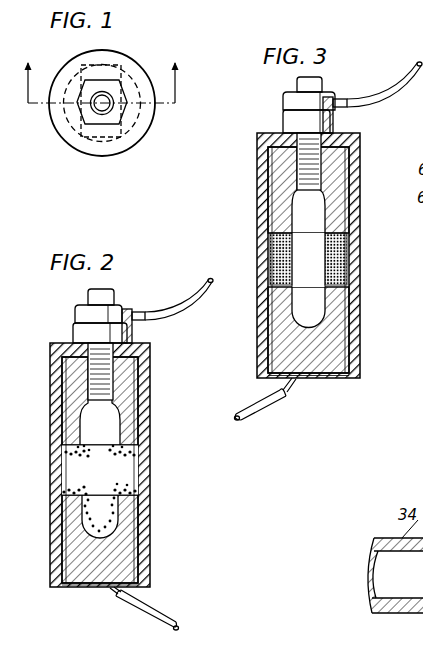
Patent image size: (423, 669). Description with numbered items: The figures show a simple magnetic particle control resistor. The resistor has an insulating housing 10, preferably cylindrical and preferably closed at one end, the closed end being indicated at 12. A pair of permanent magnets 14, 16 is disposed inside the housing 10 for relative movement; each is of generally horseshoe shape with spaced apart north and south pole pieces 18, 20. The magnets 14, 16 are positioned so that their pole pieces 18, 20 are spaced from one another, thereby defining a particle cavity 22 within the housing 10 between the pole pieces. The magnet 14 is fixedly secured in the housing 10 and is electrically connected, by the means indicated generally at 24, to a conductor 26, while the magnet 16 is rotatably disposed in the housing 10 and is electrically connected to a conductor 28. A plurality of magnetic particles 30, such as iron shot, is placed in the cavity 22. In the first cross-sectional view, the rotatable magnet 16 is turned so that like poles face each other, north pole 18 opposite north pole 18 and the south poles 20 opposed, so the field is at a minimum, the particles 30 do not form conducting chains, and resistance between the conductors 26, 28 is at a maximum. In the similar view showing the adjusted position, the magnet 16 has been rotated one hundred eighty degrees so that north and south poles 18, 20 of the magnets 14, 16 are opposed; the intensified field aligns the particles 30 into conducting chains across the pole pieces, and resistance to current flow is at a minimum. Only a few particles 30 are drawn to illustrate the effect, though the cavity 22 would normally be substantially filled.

In FIG. 1, the insulating housing 10 is at (100, 119).
In FIG. 2, the insulating housing 10 is at (113, 459).
In FIG. 3, the insulating housing 10 is at (316, 233).
In FIG. 1, the closed end 12 is at (142, 130).
In FIG. 2, the closed end 12 is at (140, 346).
In FIG. 3, the closed end 12 is at (268, 132).
In FIG. 1, the permanent magnet 14 is at (127, 70).
In FIG. 2, the permanent magnet 14 is at (131, 401).
In FIG. 3, the permanent magnet 14 is at (340, 173).
In FIG. 2, the permanent magnet 16 is at (127, 545).
In FIG. 3, the permanent magnet 16 is at (335, 348).
In FIG. 2, the north pole piece 18 is at (62, 426).
In FIG. 3, the north pole piece 18 is at (268, 216).
In FIG. 2, the south pole piece 20 is at (132, 431).
In FIG. 3, the south pole piece 20 is at (340, 221).
In FIG. 1, the particle cavity 22 is at (100, 67).
In FIG. 2, the particle cavity 22 is at (107, 468).
In FIG. 3, the particle cavity 22 is at (343, 238).
In FIG. 1, the electrical connecting means 24 is at (80, 115).
In FIG. 2, the electrical connecting means 24 is at (76, 316).
In FIG. 3, the electrical connecting means 24 is at (341, 92).
In FIG. 2, the conductor 26 is at (170, 317).
In FIG. 3, the conductor 26 is at (388, 98).
In FIG. 2, the conductor 28 is at (147, 620).
In FIG. 3, the conductor 28 is at (263, 402).
In FIG. 2, the magnetic particles 30 is at (124, 448).
In FIG. 3, the magnetic particles 30 is at (265, 249).